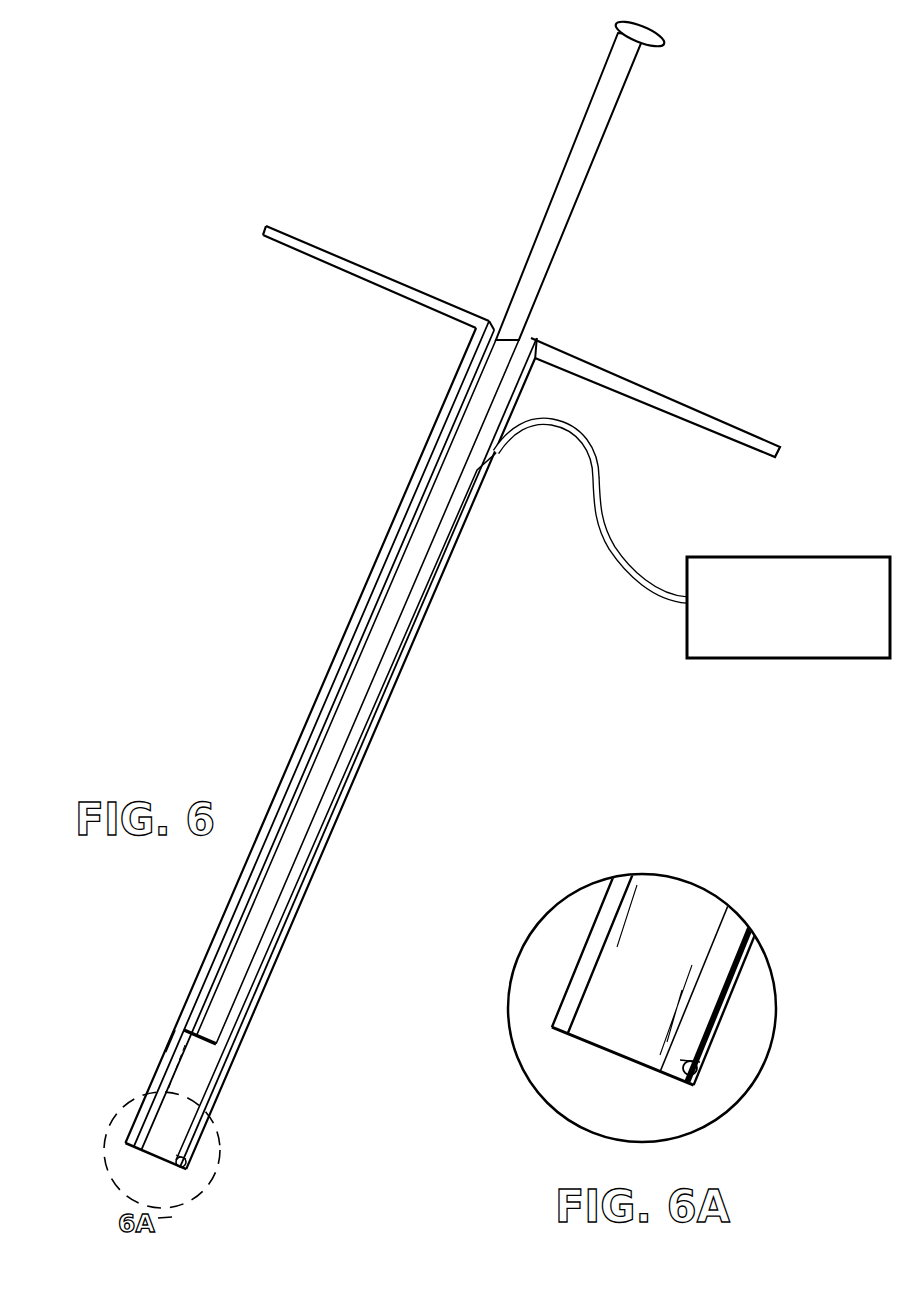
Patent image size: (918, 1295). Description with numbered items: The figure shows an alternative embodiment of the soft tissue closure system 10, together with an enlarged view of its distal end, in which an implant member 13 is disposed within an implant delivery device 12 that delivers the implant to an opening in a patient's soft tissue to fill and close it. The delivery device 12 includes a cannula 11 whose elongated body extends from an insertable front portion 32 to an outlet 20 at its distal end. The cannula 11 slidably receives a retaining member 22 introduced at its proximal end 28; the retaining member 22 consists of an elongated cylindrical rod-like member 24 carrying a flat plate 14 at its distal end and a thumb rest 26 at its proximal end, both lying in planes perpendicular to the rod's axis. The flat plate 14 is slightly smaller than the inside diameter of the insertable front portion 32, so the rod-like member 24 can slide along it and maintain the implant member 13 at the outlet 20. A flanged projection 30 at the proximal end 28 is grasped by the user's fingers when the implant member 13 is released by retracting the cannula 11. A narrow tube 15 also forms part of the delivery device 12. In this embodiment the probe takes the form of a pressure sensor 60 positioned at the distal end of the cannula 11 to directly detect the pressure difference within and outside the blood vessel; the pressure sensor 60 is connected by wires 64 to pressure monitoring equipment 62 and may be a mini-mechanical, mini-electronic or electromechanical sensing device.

In FIG. 6, the soft tissue closure system 10 is at (496, 716).
In FIG. 6, the cannula 11 is at (362, 597).
In FIG. 6A, the cannula 11 is at (595, 940).
In FIG. 6, the implant delivery device 12 is at (308, 680).
In FIG. 6, the implant member 13 is at (200, 1104).
In FIG. 6A, the implant member 13 is at (638, 1020).
In FIG. 6, the flat plate 14 is at (218, 1044).
In FIG. 6, the narrow tube 15 is at (443, 598).
In FIG. 6, the outlet 20 is at (158, 1160).
In FIG. 6, the retaining member 22 is at (603, 178).
In FIG. 6, the rod-like member 24 is at (312, 803).
In FIG. 6, the thumb rest 26 is at (662, 33).
In FIG. 6, the proximal end 28 is at (537, 333).
In FIG. 6, the flanged projection 30 is at (709, 417).
In FIG. 6, the insertable front portion 32 is at (173, 1037).
In FIG. 6, the pressure sensor 60 is at (183, 1170).
In FIG. 6A, the pressure sensor 60 is at (698, 1071).
In FIG. 6, the pressure monitoring equipment 62 is at (760, 660).
In FIG. 6, the wires 64 is at (634, 580).
In FIG. 6A, the wires 64 is at (727, 980).